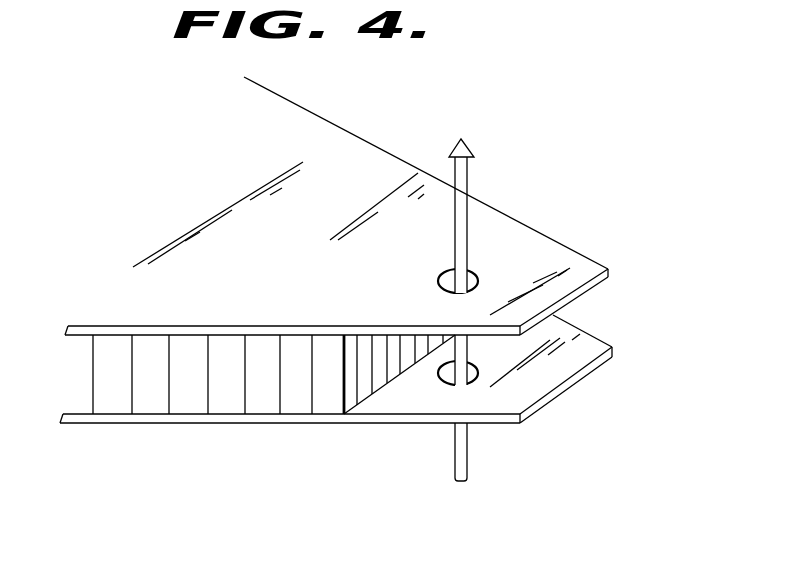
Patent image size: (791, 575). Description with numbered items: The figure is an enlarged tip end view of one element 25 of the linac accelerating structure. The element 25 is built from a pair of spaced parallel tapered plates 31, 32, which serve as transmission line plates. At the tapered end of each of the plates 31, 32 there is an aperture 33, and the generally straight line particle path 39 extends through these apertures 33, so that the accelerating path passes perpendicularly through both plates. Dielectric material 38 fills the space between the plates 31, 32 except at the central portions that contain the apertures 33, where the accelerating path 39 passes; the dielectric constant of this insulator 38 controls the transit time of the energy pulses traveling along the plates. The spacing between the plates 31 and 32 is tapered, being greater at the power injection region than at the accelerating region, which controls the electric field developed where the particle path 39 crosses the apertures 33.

The element 25 is at (432, 122).
The tapered plate 31 is at (530, 247).
The tapered plate 32 is at (553, 367).
The aperture 33 is at (440, 383).
The dielectric material 38 is at (190, 402).
The particle path 39 is at (468, 170).